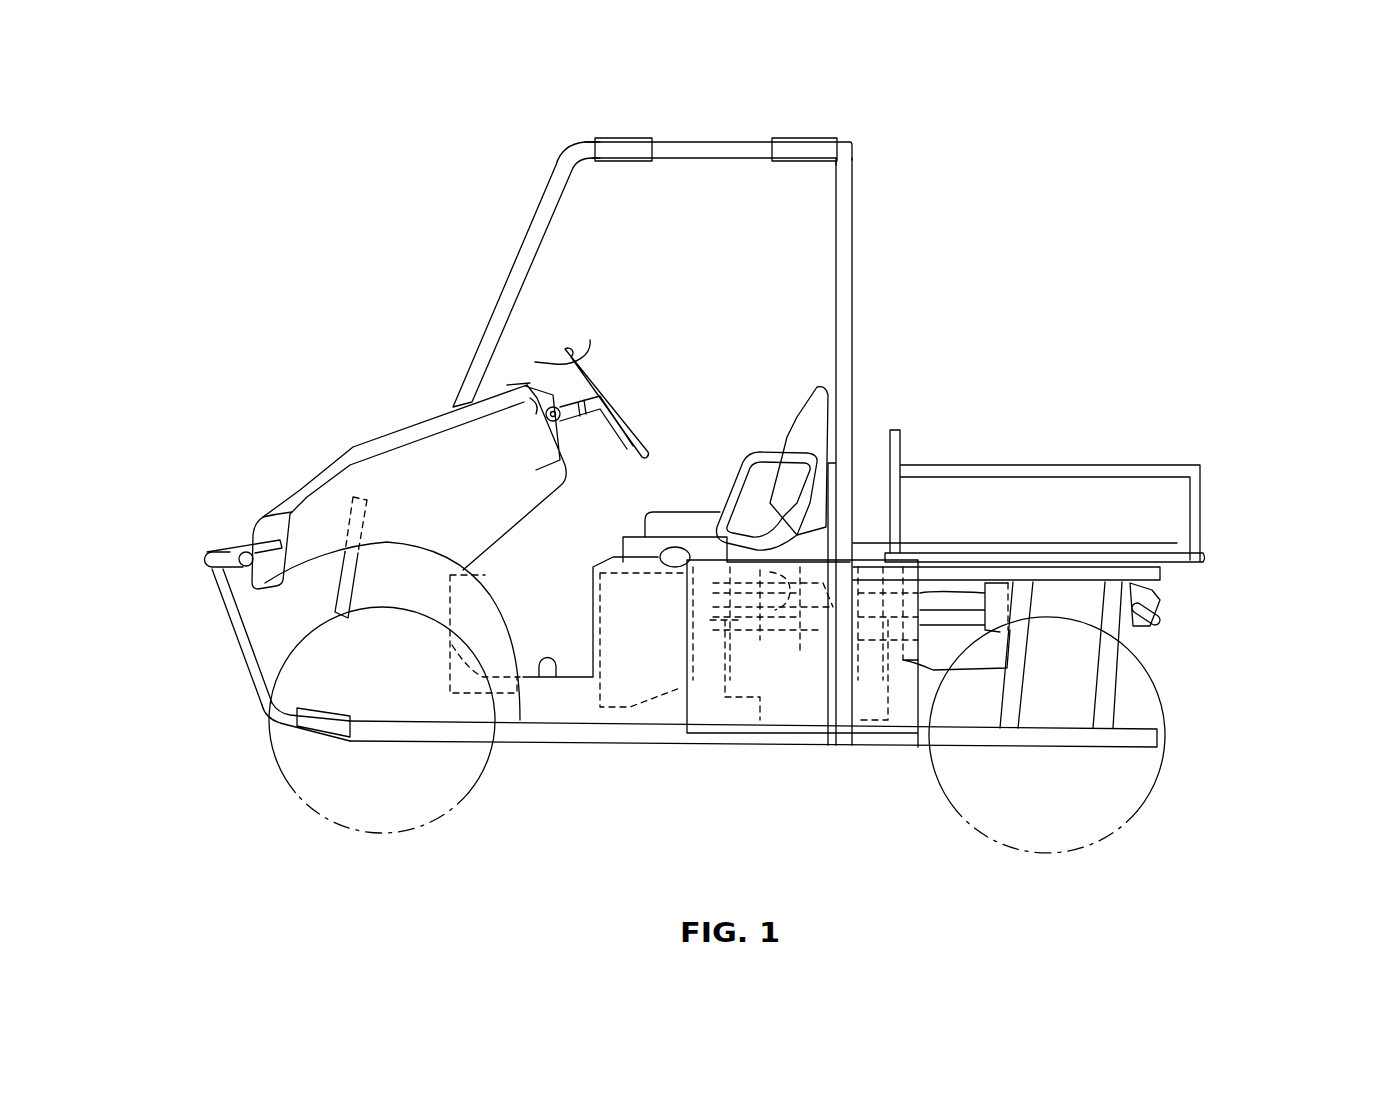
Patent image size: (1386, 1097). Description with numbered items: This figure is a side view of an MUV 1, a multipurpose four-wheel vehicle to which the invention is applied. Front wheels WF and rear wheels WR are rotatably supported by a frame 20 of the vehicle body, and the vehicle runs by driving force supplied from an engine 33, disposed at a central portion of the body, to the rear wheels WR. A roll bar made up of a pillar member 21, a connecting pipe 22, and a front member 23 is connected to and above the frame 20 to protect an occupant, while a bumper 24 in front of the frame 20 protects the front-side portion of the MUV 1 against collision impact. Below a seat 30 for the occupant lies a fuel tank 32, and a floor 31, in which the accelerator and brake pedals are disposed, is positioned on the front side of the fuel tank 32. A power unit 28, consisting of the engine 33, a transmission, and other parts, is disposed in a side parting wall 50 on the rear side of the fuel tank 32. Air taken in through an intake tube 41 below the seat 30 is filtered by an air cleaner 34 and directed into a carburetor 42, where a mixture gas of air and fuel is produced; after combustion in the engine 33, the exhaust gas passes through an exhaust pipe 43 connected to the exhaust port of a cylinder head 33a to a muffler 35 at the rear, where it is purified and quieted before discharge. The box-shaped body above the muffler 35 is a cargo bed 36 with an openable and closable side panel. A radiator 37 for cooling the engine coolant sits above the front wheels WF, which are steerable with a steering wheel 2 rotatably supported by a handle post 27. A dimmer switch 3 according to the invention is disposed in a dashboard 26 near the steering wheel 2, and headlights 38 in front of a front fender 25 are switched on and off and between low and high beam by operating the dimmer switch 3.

The MUV 1 is at (293, 132).
The steering wheel 2 is at (590, 340).
The dimmer switch 3 is at (558, 400).
The frame 20 is at (590, 737).
The pillar member 21 is at (852, 273).
The connecting pipe 22 is at (853, 143).
The front member 23 is at (540, 212).
The bumper 24 is at (212, 553).
The front fender 25 is at (350, 442).
The dashboard 26 is at (533, 400).
The handle post 27 is at (413, 443).
The power unit 28 is at (873, 722).
The seat 30 is at (815, 430).
The floor 31 is at (548, 678).
The fuel tank 32 is at (647, 690).
The engine 33 is at (800, 678).
The cylinder head 33a is at (772, 580).
The air cleaner 34 is at (917, 663).
The muffler 35 is at (1158, 601).
The cargo bed 36 is at (1109, 508).
The radiator 37 is at (342, 578).
The headlights 38 is at (273, 531).
The intake tube 41 is at (710, 556).
The carburetor 42 is at (873, 600).
The exhaust pipe 43 is at (714, 630).
The side parting wall 50 is at (687, 712).
The front wheels WF is at (285, 777).
The rear wheels WR is at (1148, 784).